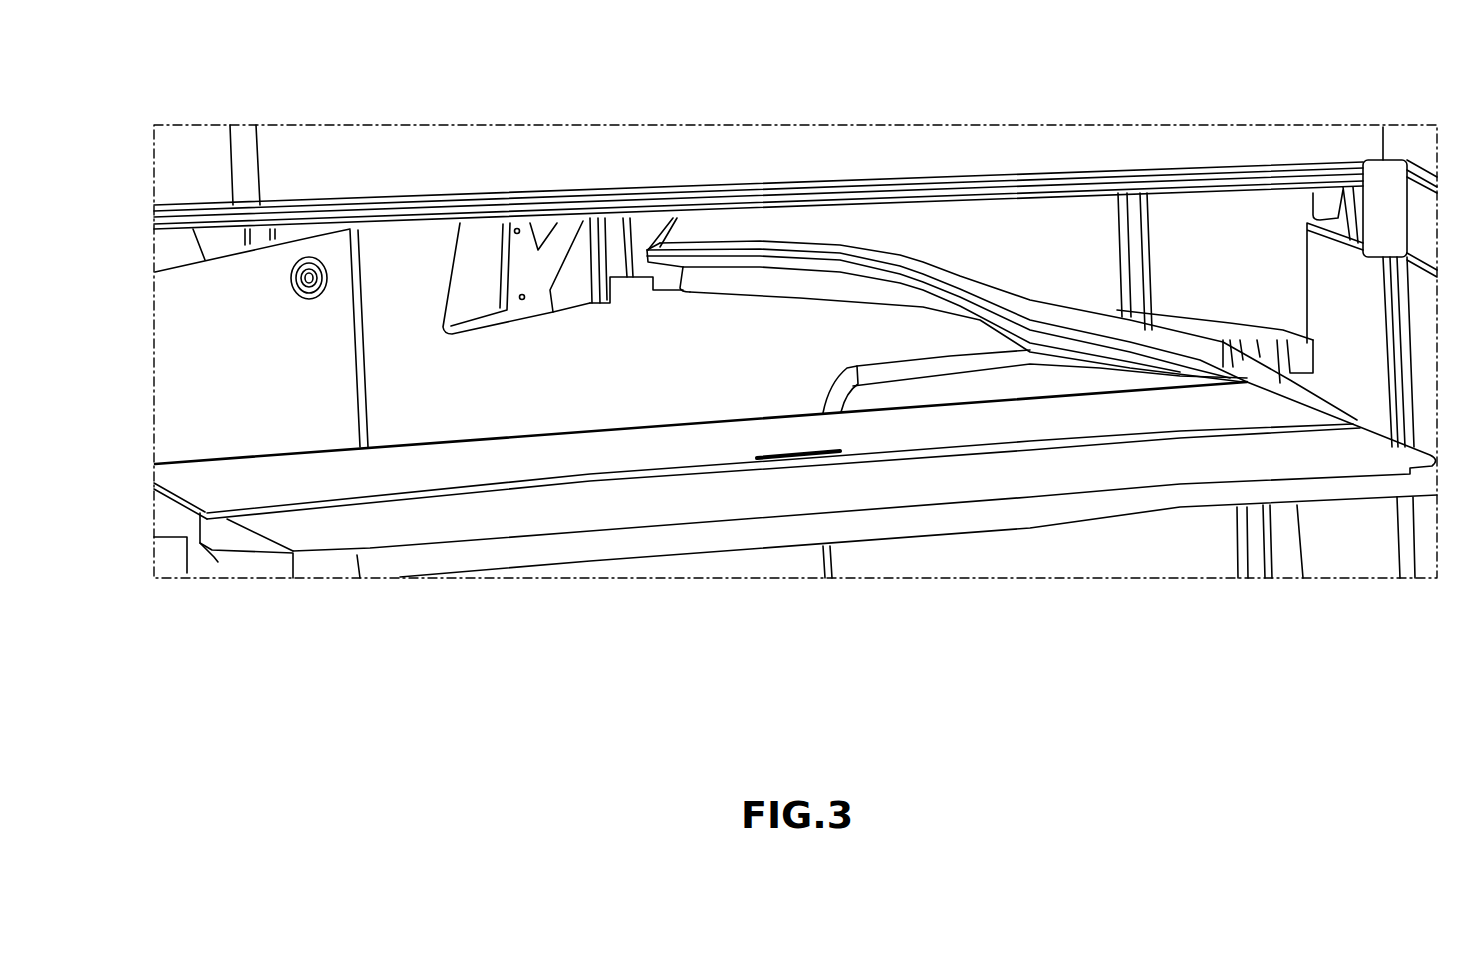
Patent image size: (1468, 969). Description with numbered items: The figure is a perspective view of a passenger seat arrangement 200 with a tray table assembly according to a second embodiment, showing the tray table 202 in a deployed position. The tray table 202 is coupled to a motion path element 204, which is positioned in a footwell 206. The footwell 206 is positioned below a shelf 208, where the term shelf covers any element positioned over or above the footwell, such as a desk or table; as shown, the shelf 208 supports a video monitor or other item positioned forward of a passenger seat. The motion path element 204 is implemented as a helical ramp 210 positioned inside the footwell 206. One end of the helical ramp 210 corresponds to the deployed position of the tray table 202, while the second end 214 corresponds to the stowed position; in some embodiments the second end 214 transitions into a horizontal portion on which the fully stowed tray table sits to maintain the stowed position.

The storage assembly 200 is at (1298, 92).
The tray table 202 is at (1332, 455).
The motion path element 204 is at (889, 236).
The footwell 206 is at (203, 423).
The shelf 208 is at (483, 200).
The helical ramp 210 is at (1031, 302).
The second end 214 is at (709, 226).